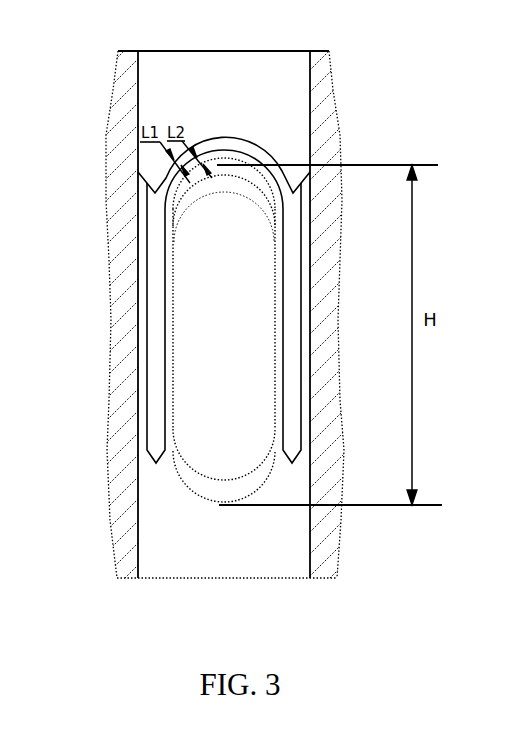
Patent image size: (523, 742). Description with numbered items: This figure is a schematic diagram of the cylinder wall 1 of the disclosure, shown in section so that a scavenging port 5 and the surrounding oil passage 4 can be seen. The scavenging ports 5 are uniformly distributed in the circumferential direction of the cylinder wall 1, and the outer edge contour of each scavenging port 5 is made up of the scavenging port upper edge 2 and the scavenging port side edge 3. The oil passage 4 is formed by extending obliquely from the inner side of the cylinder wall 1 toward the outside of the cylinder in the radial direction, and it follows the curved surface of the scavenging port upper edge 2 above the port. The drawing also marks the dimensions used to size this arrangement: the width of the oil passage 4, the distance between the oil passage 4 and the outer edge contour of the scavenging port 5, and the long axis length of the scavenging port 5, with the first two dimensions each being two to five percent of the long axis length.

The cylinder wall 1 is at (217, 122).
The scavenging port upper edge 2 is at (140, 177).
The scavenging port side edge 3 is at (158, 350).
The oil passage 4 is at (290, 233).
The scavenging port 5 is at (222, 422).